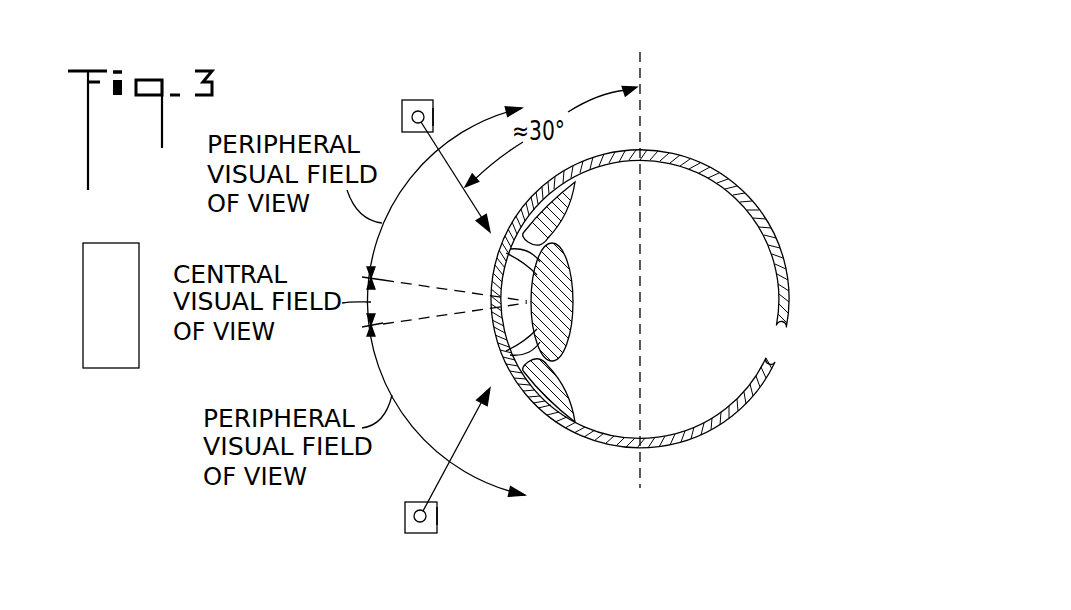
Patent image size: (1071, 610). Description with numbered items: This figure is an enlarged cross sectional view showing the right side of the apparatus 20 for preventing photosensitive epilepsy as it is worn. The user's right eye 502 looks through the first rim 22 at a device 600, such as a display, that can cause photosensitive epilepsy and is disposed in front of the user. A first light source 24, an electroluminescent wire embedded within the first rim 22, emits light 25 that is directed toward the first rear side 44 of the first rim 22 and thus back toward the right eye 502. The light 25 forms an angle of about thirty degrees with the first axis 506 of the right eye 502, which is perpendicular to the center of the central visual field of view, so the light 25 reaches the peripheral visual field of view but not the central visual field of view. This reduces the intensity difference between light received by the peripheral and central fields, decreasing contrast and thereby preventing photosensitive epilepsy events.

The apparatus 20 is at (425, 314).
The first rim 22 is at (402, 113).
The first light source 24 is at (418, 117).
The light 25 is at (447, 163).
The first rear side 44 is at (436, 120).
The right eye 502 is at (724, 133).
The first axis 506 is at (641, 61).
The device 600 is at (105, 306).